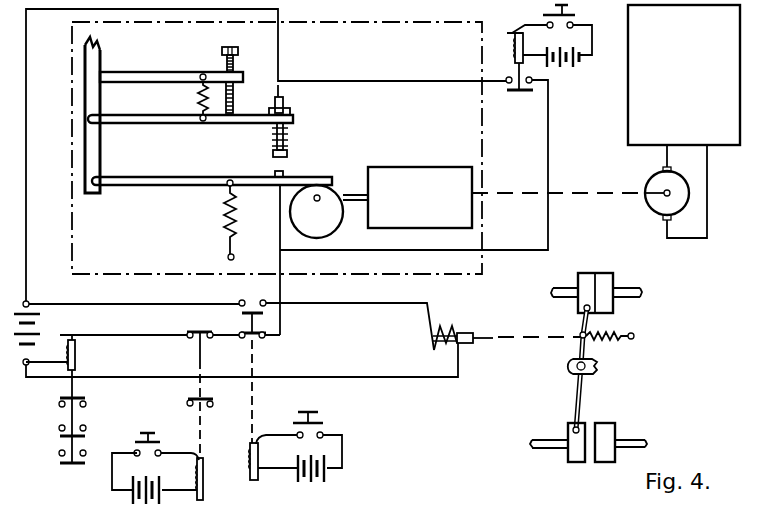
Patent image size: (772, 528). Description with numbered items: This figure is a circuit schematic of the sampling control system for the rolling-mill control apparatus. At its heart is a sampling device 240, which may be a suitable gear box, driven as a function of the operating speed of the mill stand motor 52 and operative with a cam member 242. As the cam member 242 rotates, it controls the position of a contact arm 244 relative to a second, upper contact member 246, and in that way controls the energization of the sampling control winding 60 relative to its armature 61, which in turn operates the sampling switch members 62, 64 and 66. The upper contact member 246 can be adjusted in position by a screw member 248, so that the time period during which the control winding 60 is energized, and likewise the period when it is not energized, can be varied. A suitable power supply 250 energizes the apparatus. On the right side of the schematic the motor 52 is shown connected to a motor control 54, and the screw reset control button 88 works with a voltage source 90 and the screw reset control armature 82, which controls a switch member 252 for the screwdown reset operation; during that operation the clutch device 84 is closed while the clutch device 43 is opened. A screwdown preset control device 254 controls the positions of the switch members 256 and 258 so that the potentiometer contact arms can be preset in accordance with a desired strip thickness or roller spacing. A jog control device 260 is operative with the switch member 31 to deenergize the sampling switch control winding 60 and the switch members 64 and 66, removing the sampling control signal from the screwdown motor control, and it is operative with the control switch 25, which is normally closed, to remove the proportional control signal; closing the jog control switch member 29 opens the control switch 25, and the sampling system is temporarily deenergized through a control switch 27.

The screw member 248 is at (222, 51).
The second contact member 246 is at (273, 153).
The contact arm 244 is at (190, 176).
The cam member 242 is at (338, 229).
The sampling device 240 is at (420, 167).
The mill stand motor 52 is at (656, 175).
The motor control 54 is at (628, 10).
The screw reset control switch member 88 is at (540, 18).
The screw reset control armature 82 is at (514, 45).
The voltage source 90 is at (575, 66).
The switch member 252 is at (531, 92).
The clutch device 84 is at (621, 265).
The clutch device 43 is at (615, 423).
The power supply 250 is at (40, 327).
The switch member 258 is at (250, 297).
The switch member 256 is at (262, 340).
The switch member 31 is at (206, 330).
The control switch 25 is at (208, 403).
The control switch 27 is at (205, 472).
The jog control switch member 29 is at (153, 433).
The jog control device 260 is at (170, 525).
The screwdown preset control device 254 is at (323, 503).
The sampling control winding 60 is at (82, 350).
The armature 61 is at (80, 368).
The sampling switch member 62 is at (60, 421).
The sampling switch member 64 is at (88, 430).
The sampling switch member 66 is at (58, 452).